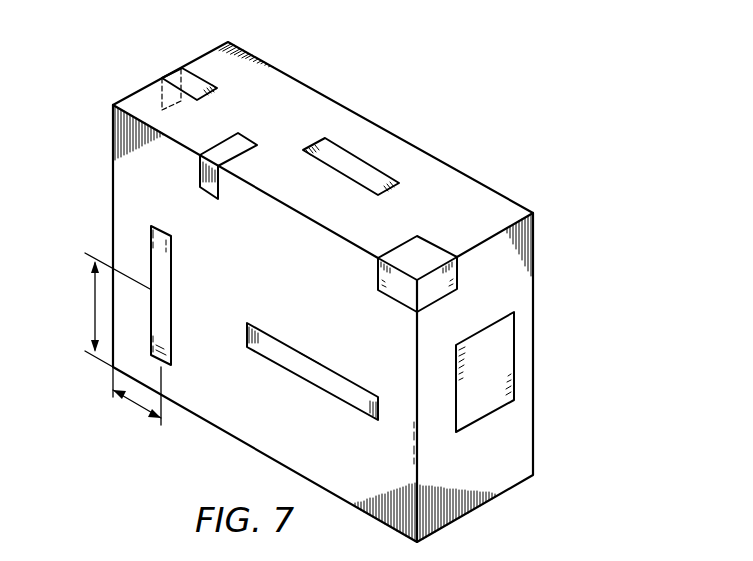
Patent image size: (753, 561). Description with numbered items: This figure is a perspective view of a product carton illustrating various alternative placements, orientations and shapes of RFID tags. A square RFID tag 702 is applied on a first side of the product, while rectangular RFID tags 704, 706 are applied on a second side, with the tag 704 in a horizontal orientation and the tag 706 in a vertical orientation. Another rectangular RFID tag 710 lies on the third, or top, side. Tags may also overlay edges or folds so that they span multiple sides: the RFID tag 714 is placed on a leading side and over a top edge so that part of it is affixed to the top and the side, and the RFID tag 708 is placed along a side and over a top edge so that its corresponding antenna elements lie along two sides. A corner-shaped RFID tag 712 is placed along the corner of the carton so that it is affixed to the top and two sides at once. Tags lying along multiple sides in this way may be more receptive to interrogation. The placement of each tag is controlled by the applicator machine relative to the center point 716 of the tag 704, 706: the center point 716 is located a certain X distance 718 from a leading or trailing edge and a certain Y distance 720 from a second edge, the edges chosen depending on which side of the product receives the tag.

The square RFID tag 702 is at (470, 408).
The rectangular RFID tag in horizontal orientation 704 is at (357, 407).
The rectangular RFID tag in vertical orientation 706 is at (165, 337).
The RFID tag over top edge 708 is at (220, 152).
The top-side RFID tag 710 is at (350, 167).
The corner RFID tag 712 is at (440, 260).
The leading-side RFID tag 714 is at (172, 80).
The center point 716 is at (162, 297).
The X distance 718 is at (135, 403).
The Y distance 720 is at (93, 305).